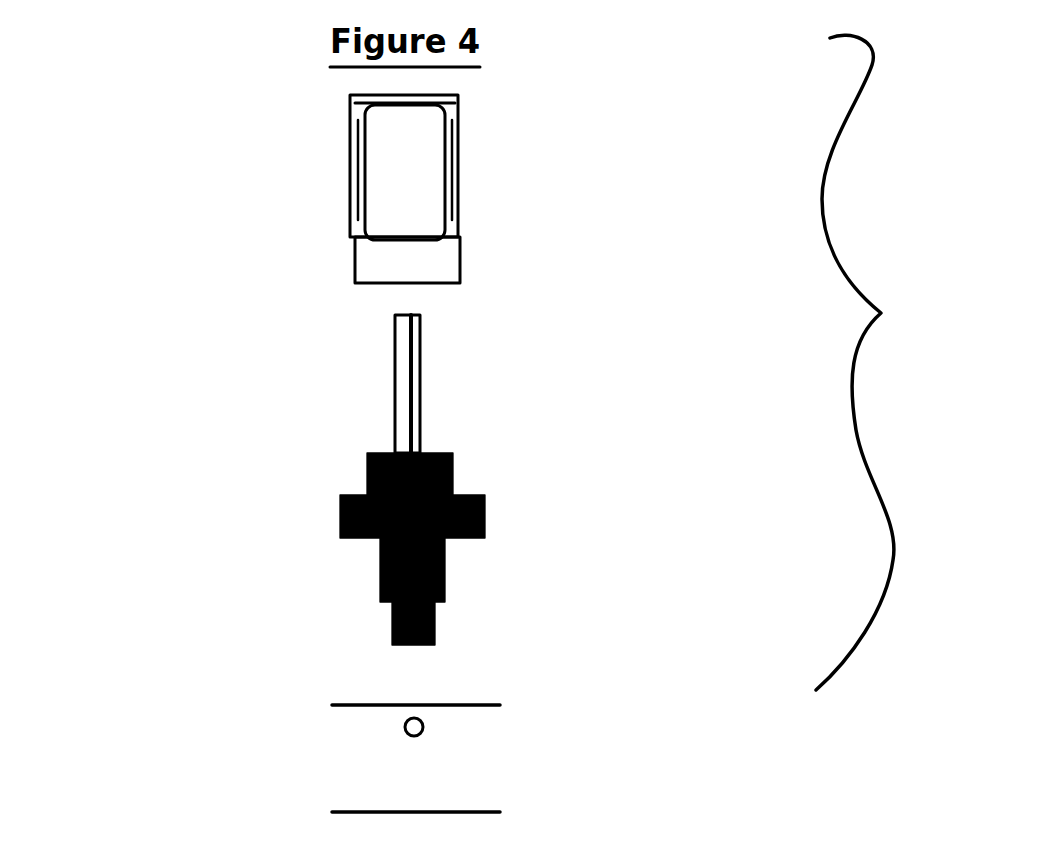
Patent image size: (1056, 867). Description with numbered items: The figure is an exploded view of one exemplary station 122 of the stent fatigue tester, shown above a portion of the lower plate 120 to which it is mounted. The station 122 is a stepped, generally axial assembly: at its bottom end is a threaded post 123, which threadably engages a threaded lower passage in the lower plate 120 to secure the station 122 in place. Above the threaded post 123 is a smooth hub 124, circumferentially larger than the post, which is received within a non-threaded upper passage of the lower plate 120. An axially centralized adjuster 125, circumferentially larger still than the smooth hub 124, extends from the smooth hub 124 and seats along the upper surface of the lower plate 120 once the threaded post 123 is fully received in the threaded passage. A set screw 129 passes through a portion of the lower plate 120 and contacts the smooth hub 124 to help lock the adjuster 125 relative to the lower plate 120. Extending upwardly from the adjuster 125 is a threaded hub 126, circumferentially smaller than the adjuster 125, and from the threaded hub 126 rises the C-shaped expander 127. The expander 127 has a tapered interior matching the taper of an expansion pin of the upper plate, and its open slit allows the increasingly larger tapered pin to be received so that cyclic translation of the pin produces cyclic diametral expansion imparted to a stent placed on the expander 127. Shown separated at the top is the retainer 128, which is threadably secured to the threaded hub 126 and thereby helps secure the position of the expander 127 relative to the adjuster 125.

The lower plate 120 is at (307, 762).
The station 122 is at (904, 362).
The threaded post 123 is at (392, 623).
The smooth hub 124 is at (445, 567).
The adjuster 125 is at (509, 502).
The threaded hub 126 is at (370, 475).
The C-shaped expander 127 is at (374, 376).
The retainer 128 is at (477, 171).
The set screw 129 is at (446, 730).